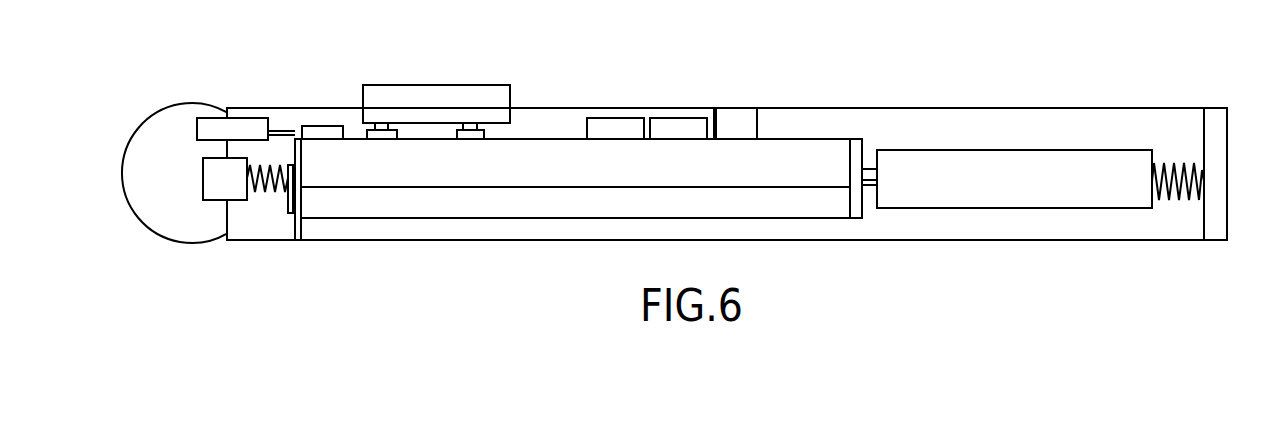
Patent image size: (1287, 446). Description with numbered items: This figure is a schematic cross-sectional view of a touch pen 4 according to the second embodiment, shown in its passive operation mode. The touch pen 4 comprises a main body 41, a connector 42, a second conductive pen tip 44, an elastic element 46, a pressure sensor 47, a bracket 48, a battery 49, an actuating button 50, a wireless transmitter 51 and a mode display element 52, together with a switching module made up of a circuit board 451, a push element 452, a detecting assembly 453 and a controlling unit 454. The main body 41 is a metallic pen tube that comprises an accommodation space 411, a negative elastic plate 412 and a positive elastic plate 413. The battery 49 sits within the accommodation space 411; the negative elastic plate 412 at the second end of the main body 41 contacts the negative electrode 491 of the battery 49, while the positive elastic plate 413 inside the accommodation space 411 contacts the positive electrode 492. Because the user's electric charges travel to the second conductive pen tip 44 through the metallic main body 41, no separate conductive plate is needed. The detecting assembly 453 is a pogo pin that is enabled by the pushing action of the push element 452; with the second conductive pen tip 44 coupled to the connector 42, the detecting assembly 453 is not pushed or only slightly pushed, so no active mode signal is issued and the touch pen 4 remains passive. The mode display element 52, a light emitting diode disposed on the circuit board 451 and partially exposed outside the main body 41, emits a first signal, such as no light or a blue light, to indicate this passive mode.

The touch pen 4 is at (976, 37).
The main body 41 is at (1030, 240).
The accommodation space 411 is at (1095, 225).
The negative elastic plate 412 is at (1190, 168).
The positive elastic plate 413 is at (858, 212).
The connector 42 is at (218, 170).
The second conductive pen tip 44 is at (150, 198).
The elastic element 46 is at (247, 180).
The pressure sensor 47 is at (290, 207).
The bracket 48 is at (418, 205).
The battery 49 is at (1043, 165).
The negative electrode 491 is at (1152, 200).
The positive electrode 492 is at (870, 170).
The circuit board 451 is at (810, 150).
The push element 452 is at (212, 122).
The detecting assembly 453 is at (322, 132).
The controlling unit 454 is at (618, 123).
The actuating button 50 is at (440, 97).
The wireless transmitter 51 is at (675, 123).
The mode display element 52 is at (737, 123).